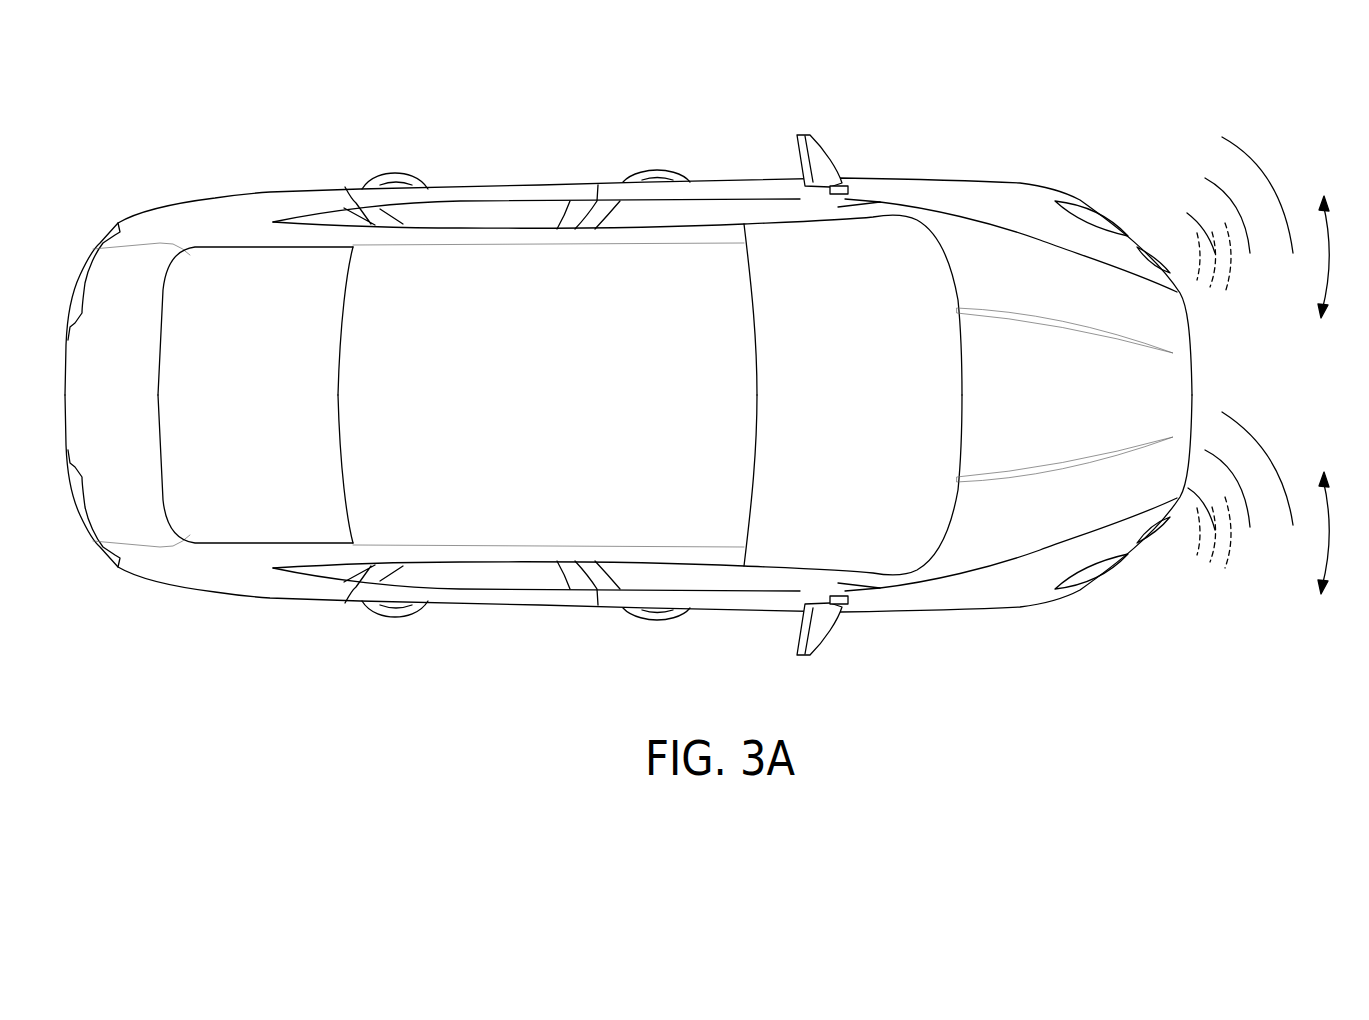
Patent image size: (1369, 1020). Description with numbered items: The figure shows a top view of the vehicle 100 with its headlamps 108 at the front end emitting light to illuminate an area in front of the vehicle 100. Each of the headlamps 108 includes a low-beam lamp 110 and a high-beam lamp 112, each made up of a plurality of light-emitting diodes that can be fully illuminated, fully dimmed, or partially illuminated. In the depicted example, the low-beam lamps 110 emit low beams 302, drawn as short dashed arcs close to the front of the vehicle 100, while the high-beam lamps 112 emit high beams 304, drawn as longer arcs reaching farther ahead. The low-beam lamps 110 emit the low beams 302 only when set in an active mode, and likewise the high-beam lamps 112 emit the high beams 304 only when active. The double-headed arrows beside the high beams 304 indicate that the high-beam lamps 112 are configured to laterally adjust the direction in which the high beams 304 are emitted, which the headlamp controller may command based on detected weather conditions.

The vehicle 100 is at (270, 192).
The headlamps 108 is at (1113, 397).
The low-beam lamp 110 is at (1153, 260).
The high-beam lamp 112 is at (1117, 223).
The low beams 302 is at (1230, 282).
The high beams 304 is at (1260, 163).